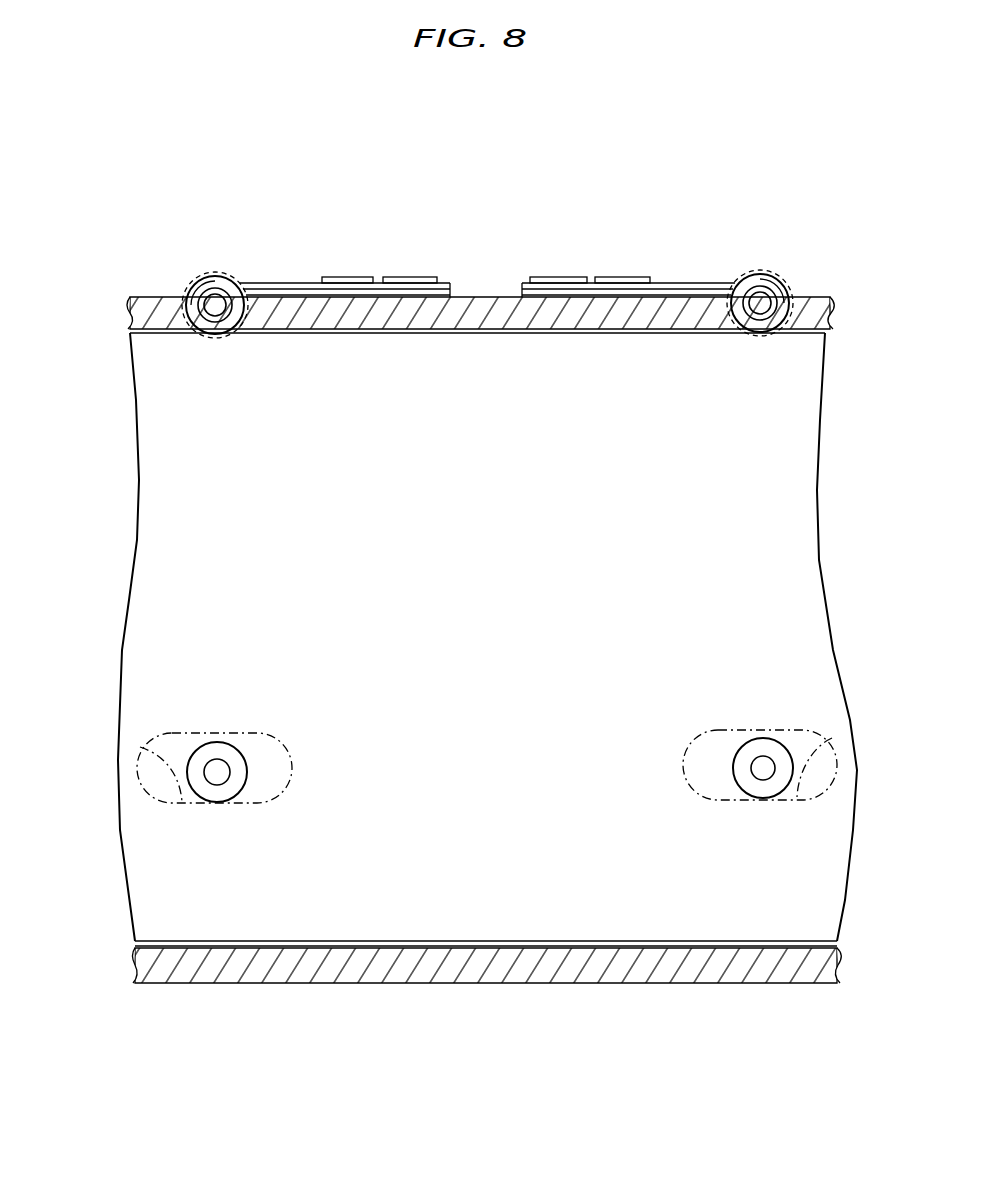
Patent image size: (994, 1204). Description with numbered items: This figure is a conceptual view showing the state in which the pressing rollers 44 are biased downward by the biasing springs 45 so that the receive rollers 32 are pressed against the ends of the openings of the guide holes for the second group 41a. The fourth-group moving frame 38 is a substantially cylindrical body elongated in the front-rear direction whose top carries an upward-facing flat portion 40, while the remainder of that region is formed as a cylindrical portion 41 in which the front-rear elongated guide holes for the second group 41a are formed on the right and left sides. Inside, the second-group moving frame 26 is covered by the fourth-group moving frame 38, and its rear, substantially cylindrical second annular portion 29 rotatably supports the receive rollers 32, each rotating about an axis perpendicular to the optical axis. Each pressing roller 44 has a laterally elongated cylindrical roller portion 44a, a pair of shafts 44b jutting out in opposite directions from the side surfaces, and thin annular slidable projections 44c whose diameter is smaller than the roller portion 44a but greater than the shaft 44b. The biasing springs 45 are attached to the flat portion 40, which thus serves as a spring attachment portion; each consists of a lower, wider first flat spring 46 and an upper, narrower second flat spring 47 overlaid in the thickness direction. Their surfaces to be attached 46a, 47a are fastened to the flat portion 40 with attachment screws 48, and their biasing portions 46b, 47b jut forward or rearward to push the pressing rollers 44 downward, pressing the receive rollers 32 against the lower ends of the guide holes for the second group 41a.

The second-group moving frame 26 is at (797, 497).
The second annular portion 29 is at (800, 563).
The receive roller 32 is at (213, 740).
The fourth-group moving frame 38 is at (823, 291).
The flat portion 40 is at (790, 300).
The cylindrical portion 41 is at (718, 975).
The guide hole for the second group 41a is at (140, 747).
The pressing roller 44 is at (197, 283).
The roller portion 44a is at (218, 273).
The shaft 44b is at (133, 308).
The slidable projection 44c is at (180, 322).
The biasing spring 45 is at (487, 219).
The first flat spring 46 is at (456, 287).
The surface to be attached 46a is at (331, 284).
The biasing portion 46b is at (185, 288).
The second flat spring 47 is at (440, 292).
The surface to be attached 47a is at (379, 290).
The biasing portion 47b is at (182, 290).
The attachment screw 48 is at (336, 277).